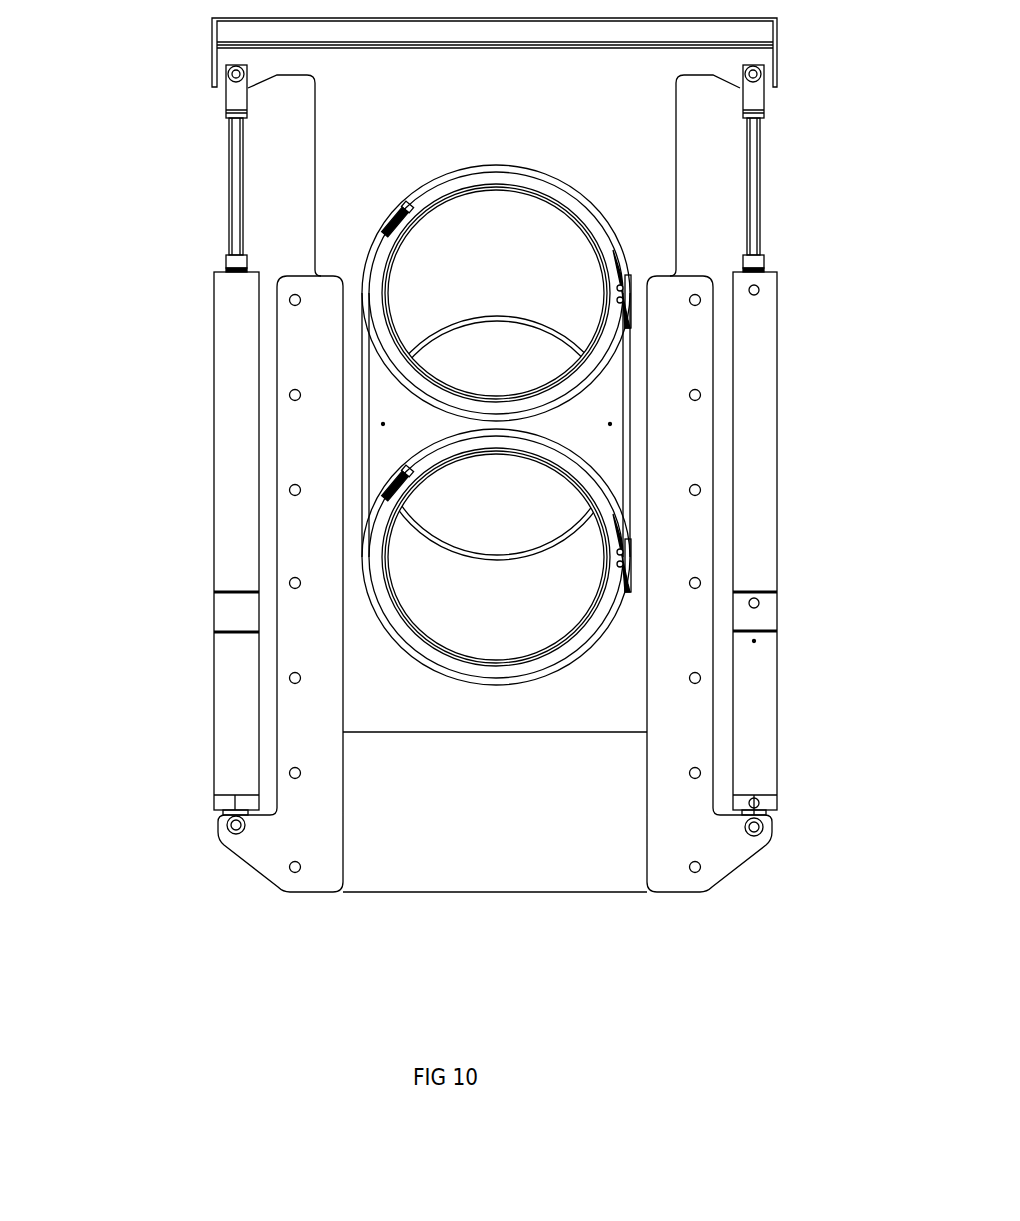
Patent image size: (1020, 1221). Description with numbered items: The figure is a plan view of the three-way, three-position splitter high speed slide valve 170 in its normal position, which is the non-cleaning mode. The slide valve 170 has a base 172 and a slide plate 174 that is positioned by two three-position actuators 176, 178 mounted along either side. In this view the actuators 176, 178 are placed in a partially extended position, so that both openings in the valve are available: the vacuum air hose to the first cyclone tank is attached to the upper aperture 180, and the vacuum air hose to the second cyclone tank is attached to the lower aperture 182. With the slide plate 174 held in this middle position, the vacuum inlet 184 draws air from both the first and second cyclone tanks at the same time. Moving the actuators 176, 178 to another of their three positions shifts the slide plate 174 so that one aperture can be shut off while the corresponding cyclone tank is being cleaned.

The splitter high speed slide valve 170 is at (778, 862).
The base 172 is at (696, 885).
The slide plate 174 is at (782, 73).
The three-position actuator 176 is at (217, 547).
The three-position actuator 178 is at (779, 570).
The upper aperture 180 is at (382, 322).
The lower aperture 182 is at (385, 598).
The vacuum inlet 184 is at (563, 338).